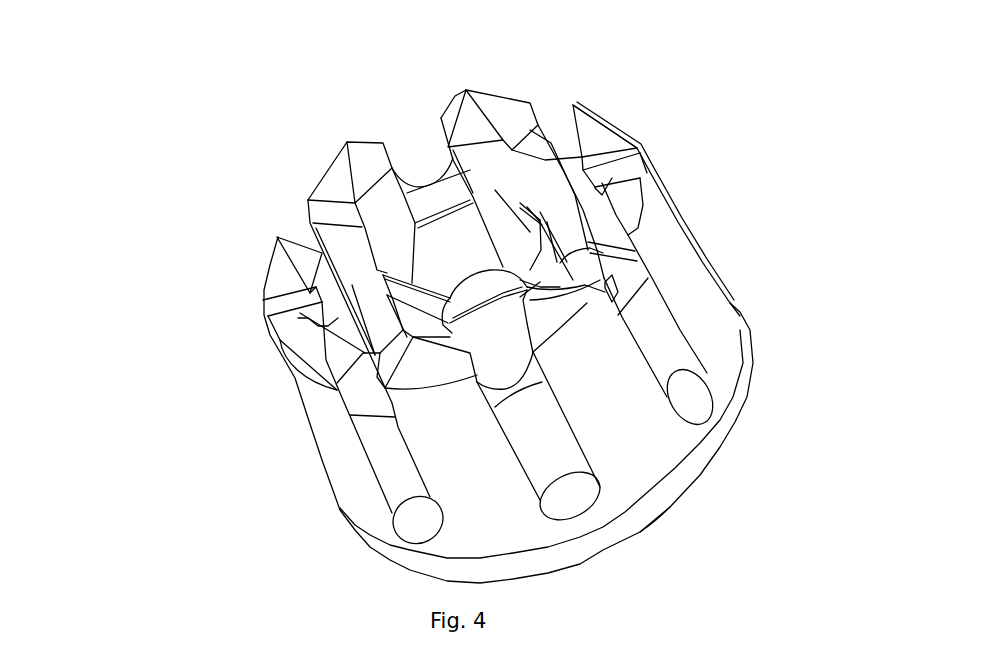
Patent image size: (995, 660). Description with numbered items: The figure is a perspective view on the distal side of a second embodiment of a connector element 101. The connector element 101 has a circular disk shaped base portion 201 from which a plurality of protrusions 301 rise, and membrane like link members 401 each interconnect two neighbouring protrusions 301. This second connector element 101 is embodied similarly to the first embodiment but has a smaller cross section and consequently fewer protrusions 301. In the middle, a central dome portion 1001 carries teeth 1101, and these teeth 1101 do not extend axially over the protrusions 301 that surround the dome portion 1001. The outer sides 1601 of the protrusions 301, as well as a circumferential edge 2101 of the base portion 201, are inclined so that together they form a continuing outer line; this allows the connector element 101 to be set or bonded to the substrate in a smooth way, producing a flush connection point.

The connector element 101 is at (228, 315).
The base portion 201 is at (681, 517).
The protrusions 301 is at (696, 208).
The link members 401 is at (672, 352).
The central dome portion 1001 is at (583, 272).
The teeth 1101 is at (541, 247).
The outer sides 1601 is at (617, 420).
The circumferential edge 2101 is at (692, 465).